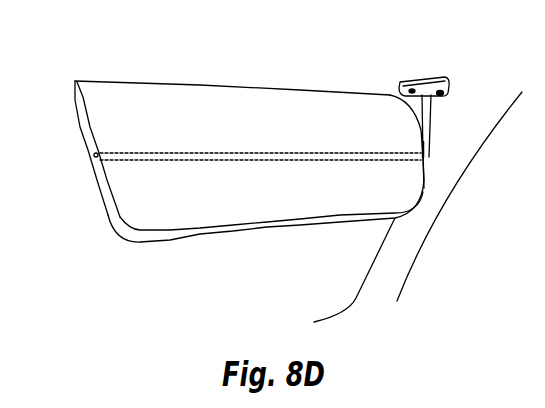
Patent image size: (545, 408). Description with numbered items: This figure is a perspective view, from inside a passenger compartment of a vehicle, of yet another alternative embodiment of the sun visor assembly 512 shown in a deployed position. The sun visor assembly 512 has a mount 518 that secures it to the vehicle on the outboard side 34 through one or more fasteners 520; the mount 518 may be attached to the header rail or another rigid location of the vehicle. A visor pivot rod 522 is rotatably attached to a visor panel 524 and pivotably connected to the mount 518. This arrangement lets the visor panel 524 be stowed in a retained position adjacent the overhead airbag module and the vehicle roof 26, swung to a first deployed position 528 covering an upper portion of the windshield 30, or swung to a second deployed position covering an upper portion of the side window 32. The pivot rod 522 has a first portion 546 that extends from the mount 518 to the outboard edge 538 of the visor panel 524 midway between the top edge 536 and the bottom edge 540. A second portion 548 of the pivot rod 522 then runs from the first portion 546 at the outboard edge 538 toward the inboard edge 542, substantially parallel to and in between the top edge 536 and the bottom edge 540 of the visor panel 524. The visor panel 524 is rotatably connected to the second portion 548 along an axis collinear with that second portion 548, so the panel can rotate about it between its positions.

The sun visor assembly 512 is at (387, 36).
The mount 518 is at (440, 78).
The fasteners 520 is at (449, 87).
The visor pivot rod 522 is at (430, 156).
The visor panel 524 is at (132, 213).
The first deployed position 528 is at (97, 88).
The top edge 536 is at (173, 83).
The outboard edge 538 is at (424, 188).
The bottom edge 540 is at (275, 225).
The inboard edge 542 is at (108, 181).
The first portion 546 is at (430, 121).
The second portion 548 is at (327, 161).
The vehicle roof 26 is at (265, 69).
The windshield 30 is at (193, 274).
The side window 32 is at (512, 286).
The outboard side 34 is at (468, 329).